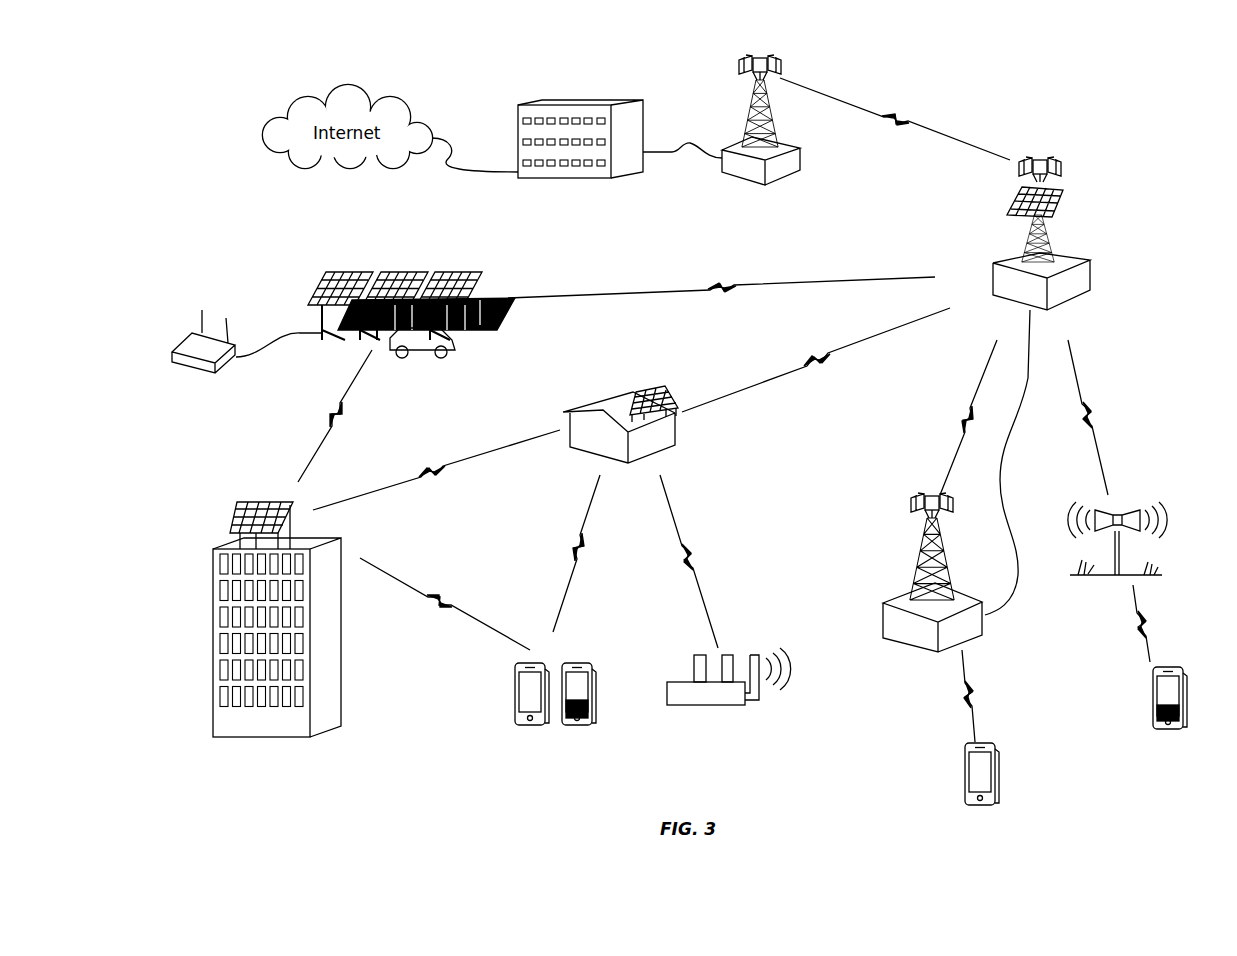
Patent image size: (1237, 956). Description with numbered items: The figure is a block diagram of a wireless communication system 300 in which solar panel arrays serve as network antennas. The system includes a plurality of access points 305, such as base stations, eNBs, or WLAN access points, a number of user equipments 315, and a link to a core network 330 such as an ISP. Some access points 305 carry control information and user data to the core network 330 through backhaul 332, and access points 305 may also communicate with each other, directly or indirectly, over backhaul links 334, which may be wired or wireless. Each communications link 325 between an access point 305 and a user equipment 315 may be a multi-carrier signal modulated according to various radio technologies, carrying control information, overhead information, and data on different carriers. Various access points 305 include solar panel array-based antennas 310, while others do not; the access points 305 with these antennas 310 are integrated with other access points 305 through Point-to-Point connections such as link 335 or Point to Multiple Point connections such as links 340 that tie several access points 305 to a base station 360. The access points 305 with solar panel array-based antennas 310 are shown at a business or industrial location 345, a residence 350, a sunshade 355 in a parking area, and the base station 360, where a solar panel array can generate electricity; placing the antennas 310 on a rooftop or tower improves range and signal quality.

The wireless communication system 300 is at (1158, 146).
The access point 305 is at (800, 162).
The solar panel array-based antenna 310 is at (1062, 194).
The user equipment 315 is at (529, 726).
The communications link 325 is at (903, 115).
The core network 330 is at (565, 178).
The backhaul 332 is at (690, 150).
The backhaul link 334 is at (1022, 462).
The Point-to-Point link 335 is at (903, 128).
The Point to Multiple Point link 340 is at (780, 258).
The business or industrial location 345 is at (345, 694).
The residence 350 is at (562, 421).
The sunshade 355 is at (322, 283).
The base station 360 is at (1092, 266).